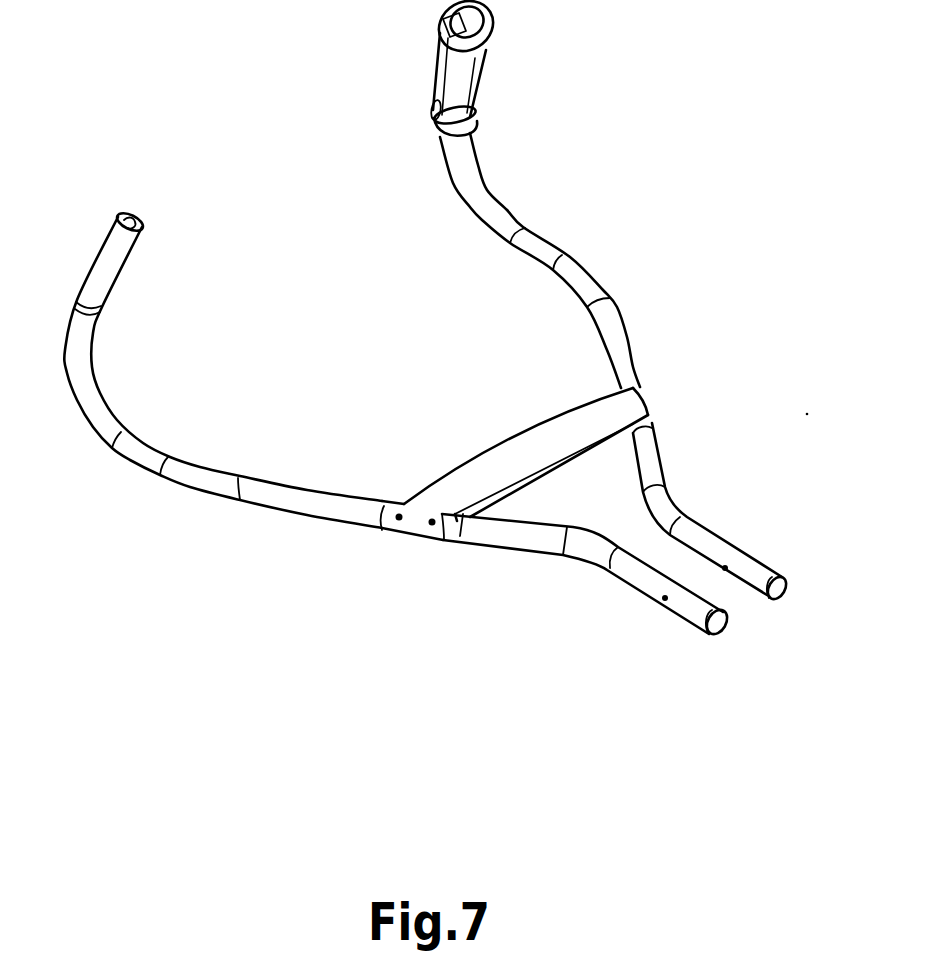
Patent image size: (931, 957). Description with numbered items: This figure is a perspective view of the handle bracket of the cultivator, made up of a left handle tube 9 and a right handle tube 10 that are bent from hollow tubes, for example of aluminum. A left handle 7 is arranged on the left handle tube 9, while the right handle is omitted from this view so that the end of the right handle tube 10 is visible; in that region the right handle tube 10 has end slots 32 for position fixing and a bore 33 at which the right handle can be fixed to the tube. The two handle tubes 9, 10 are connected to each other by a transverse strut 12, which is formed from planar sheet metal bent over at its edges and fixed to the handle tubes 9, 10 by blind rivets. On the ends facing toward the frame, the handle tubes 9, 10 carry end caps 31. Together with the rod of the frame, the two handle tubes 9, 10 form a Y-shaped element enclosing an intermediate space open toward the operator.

The left handle 7 is at (467, 80).
The left handle tube 9 is at (547, 247).
The right handle tube 10 is at (288, 500).
The transverse strut 12 is at (513, 455).
The end caps 31 is at (784, 594).
The end slots 32 is at (137, 217).
The bore 33 is at (85, 303).